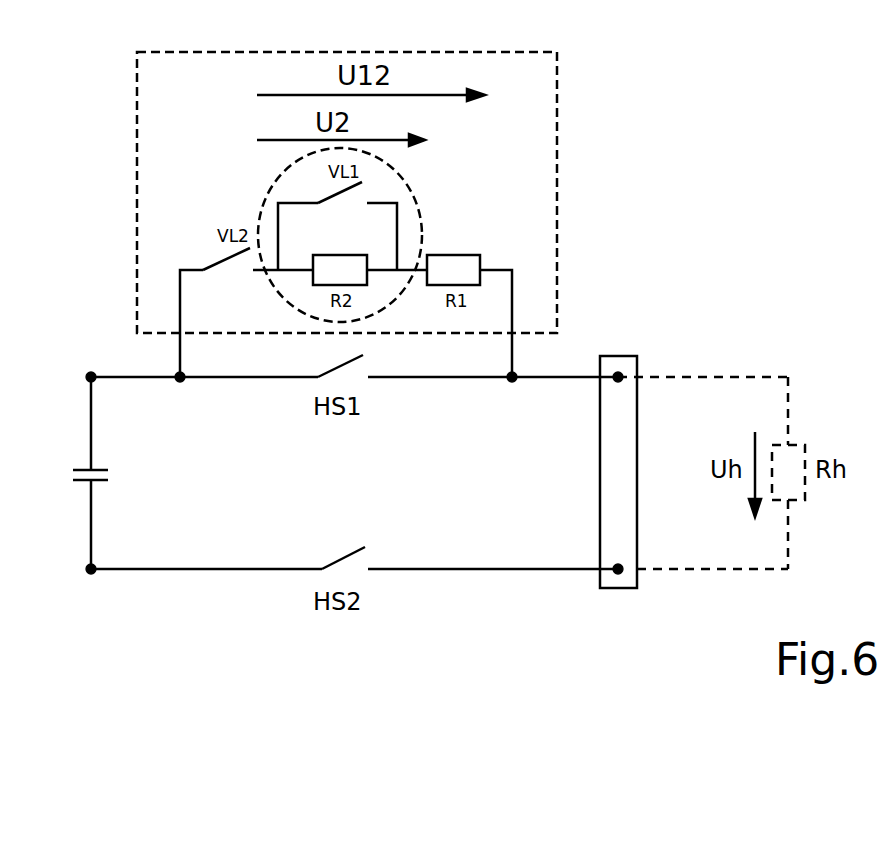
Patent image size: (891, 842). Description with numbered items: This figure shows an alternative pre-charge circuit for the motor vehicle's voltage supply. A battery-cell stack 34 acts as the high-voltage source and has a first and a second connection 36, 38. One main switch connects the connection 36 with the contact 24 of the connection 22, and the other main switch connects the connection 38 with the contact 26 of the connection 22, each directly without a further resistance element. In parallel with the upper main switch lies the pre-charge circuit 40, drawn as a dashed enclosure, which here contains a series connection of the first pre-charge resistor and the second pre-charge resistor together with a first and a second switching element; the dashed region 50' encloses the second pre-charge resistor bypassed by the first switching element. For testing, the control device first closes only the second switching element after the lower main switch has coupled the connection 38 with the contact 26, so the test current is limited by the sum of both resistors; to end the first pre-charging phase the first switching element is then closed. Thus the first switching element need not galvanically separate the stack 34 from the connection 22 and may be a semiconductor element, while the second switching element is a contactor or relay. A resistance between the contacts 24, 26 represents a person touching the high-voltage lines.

The connection 22 is at (627, 356).
The contact 24 is at (618, 378).
The contact 26 is at (618, 568).
The battery-cell stack 34 is at (80, 468).
The connection of the stack 36 is at (91, 378).
The connection of the stack 38 is at (91, 569).
The pre-charge circuit 40 is at (555, 168).
The switchable resistor arrangement 50' is at (390, 235).